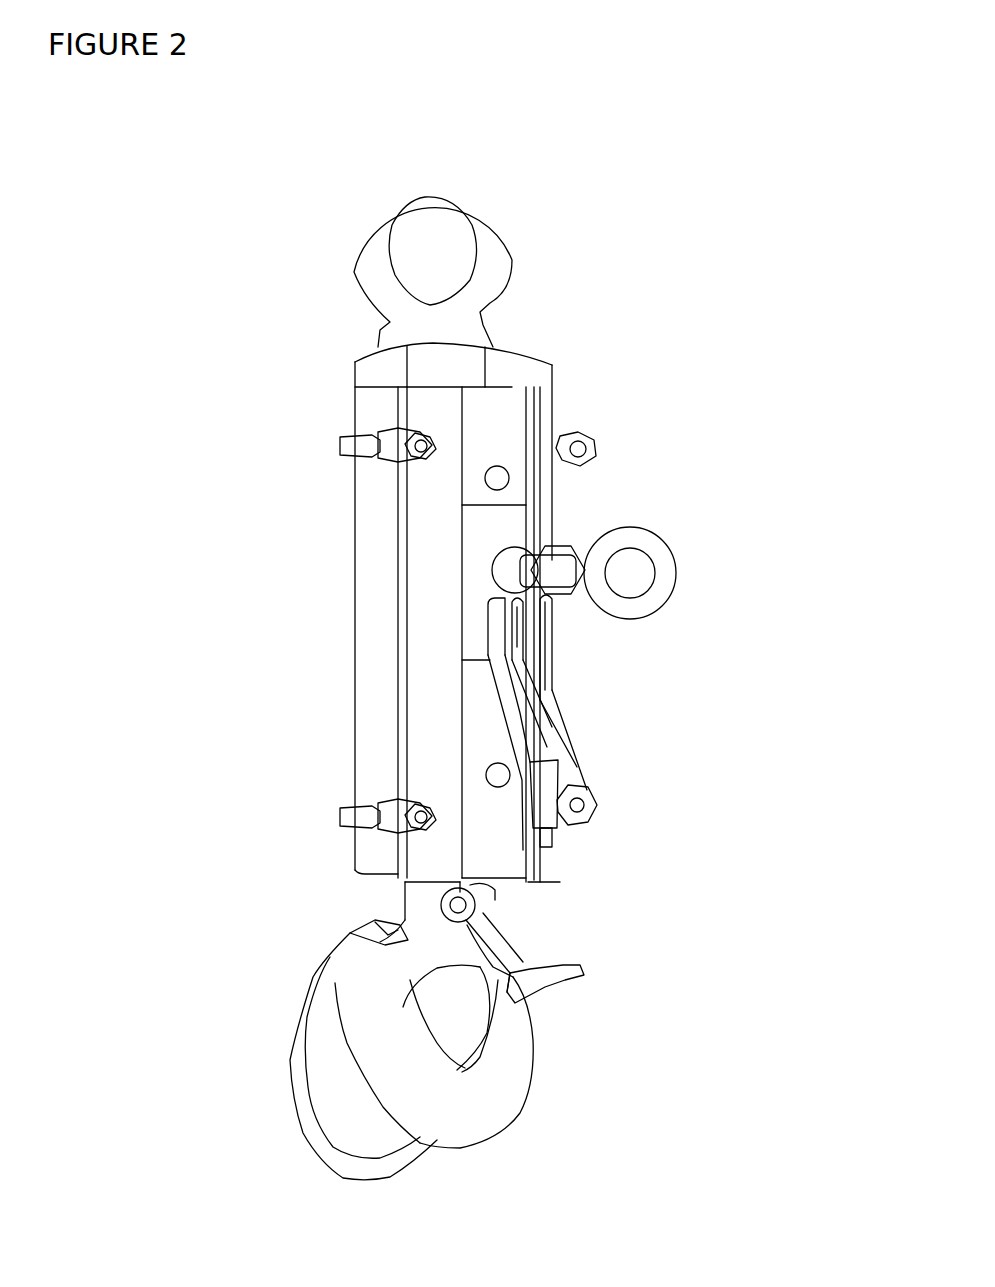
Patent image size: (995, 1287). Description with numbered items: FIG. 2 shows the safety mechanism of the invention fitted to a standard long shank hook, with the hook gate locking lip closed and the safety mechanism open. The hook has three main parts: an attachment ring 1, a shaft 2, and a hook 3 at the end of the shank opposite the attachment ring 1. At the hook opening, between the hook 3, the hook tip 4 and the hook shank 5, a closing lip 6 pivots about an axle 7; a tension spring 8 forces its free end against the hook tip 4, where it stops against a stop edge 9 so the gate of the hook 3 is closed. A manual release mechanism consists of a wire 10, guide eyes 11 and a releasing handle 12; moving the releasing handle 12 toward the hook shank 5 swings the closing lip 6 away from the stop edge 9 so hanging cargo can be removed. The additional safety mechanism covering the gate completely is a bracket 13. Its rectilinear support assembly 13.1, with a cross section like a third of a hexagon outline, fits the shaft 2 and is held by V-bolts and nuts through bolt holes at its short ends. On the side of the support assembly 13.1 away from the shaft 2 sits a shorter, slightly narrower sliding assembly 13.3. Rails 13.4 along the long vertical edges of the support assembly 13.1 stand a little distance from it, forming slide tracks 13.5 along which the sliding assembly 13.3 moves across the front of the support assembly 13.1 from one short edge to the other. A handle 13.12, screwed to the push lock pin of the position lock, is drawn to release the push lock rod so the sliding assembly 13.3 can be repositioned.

The attachment ring 1 is at (463, 200).
The shaft 2 is at (377, 542).
The hook 3 is at (468, 1112).
The hook tip 4 is at (582, 974).
The hook shank 5 is at (415, 903).
The closing lip 6 is at (508, 945).
The axle 7 is at (457, 908).
The tension spring 8 is at (498, 888).
The stop edge 9 is at (513, 992).
The wire 10 is at (407, 940).
The guide eyes 11 is at (393, 925).
The releasing handle 12 is at (295, 1101).
The bracket 13 is at (563, 393).
The support assembly 13.1 is at (502, 404).
The sliding assembly 13.3 is at (505, 522).
The rails 13.4 is at (553, 410).
The slide tracks 13.5 is at (537, 396).
The handle 13.12 is at (665, 566).